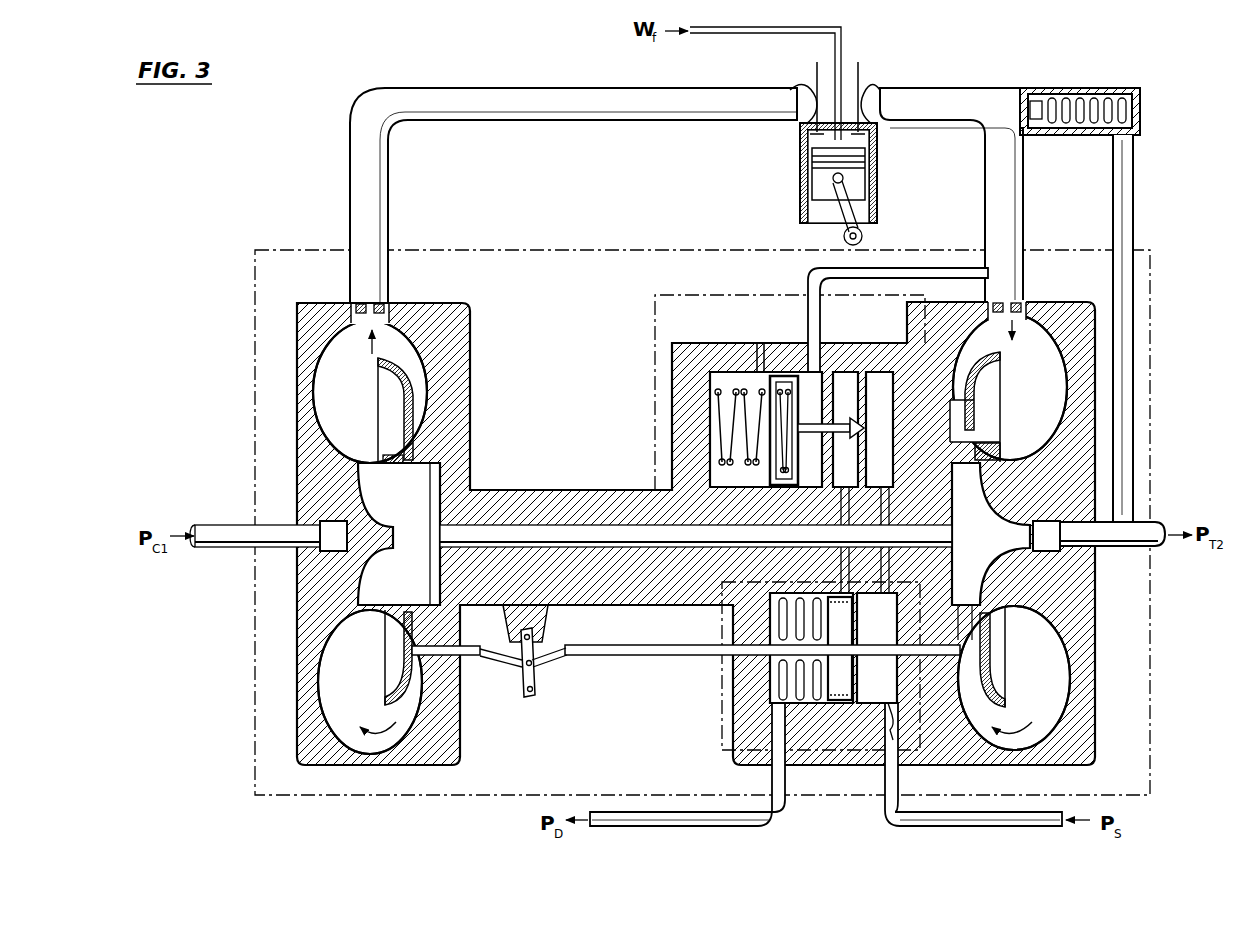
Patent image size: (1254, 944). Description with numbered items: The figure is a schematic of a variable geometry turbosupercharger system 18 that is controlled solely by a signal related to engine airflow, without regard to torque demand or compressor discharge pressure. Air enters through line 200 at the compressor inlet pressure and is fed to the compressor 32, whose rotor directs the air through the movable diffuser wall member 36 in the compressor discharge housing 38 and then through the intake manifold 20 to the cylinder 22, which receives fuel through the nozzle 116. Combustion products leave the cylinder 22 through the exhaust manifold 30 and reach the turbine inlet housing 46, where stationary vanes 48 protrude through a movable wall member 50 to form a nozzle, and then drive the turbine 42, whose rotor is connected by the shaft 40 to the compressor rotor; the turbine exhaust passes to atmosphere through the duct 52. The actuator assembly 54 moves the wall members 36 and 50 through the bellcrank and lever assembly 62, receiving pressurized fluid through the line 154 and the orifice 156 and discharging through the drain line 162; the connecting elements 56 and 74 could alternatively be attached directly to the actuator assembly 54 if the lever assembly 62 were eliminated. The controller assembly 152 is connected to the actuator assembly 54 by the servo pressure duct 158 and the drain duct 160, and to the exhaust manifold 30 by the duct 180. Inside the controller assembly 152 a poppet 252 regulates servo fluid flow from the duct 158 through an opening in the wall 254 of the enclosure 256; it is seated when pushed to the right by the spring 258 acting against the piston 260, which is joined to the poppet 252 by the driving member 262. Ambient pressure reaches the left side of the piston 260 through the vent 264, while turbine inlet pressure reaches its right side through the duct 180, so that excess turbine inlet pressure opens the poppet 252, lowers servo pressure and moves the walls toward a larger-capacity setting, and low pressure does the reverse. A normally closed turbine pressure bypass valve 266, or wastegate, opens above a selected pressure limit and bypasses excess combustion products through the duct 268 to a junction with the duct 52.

The turbosupercharger system 18 is at (250, 347).
The intake manifold 20 is at (351, 183).
The cylinder 22 is at (797, 170).
The exhaust manifold 30 is at (990, 183).
The compressor 32 is at (415, 571).
The movable diffuser wall member 36 is at (385, 645).
The compressor discharge housing 38 is at (360, 427).
The shaft 40 is at (513, 527).
The turbine 42 is at (997, 574).
The turbine inlet housing 46 is at (1038, 645).
The stationary vanes 48 is at (985, 424).
The movable wall member 50 is at (990, 362).
The duct 52 is at (1162, 522).
The actuator assembly 54 is at (720, 714).
The element 56 is at (997, 596).
The bellcrank and lever assembly 62 is at (520, 692).
The element 74 is at (440, 652).
The nozzle 116 is at (845, 80).
The controller assembly 152 is at (655, 330).
The line 154 is at (972, 826).
The orifice 156 is at (896, 722).
The servo pressure duct 158 is at (881, 520).
The drain duct 160 is at (850, 529).
The drain line 162 is at (660, 826).
The duct 180 is at (938, 282).
The line 200 is at (246, 526).
The poppet 252 is at (873, 407).
The wall 254 is at (880, 372).
The enclosure 256 is at (694, 344).
The spring 258 is at (762, 466).
The piston 260 is at (798, 450).
The driving member 262 is at (832, 420).
The vent 264 is at (764, 345).
The turbine pressure bypass valve 266 is at (1088, 100).
The duct 268 is at (1134, 183).